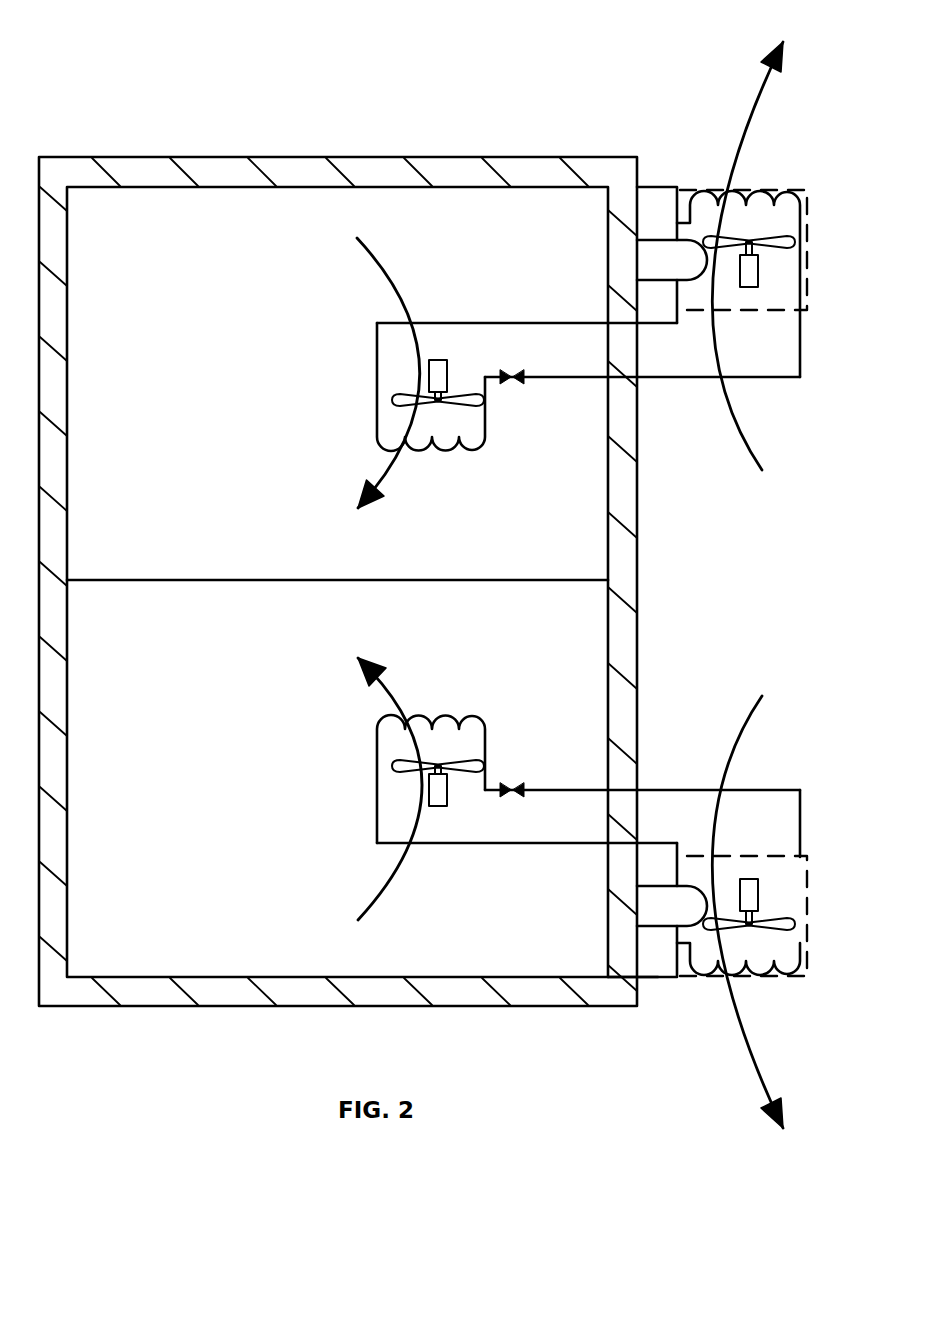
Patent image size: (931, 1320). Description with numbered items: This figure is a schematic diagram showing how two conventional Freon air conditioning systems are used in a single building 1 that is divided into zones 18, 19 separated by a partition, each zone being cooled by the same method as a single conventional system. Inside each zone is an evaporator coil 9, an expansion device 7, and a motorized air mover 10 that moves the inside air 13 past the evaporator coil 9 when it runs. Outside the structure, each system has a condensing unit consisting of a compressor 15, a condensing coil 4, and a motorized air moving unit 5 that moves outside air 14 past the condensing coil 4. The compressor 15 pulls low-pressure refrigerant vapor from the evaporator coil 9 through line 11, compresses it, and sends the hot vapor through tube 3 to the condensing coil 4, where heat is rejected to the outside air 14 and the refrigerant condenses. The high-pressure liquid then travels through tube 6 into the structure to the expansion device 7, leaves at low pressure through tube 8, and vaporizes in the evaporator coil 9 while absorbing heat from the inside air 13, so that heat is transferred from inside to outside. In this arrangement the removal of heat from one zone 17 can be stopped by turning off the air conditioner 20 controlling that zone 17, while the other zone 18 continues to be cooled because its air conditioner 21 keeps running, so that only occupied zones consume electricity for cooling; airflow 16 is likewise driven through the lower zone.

The building 1 is at (325, 168).
The tube 3 is at (726, 521).
The condensing coil 4 is at (775, 197).
The motorized air moving unit 5 is at (770, 240).
The tube 6 is at (800, 338).
The expansion device 7 is at (642, 583).
The tube 8 is at (487, 392).
The evaporator coil 9 is at (482, 453).
The motorized air mover 10 is at (440, 360).
The tube 11 is at (538, 323).
The inside air 13 is at (402, 278).
The outside air 14 is at (767, 63).
The compressor 15 is at (647, 243).
The lower compartment air flow 16 is at (400, 880).
The zone 17 is at (173, 340).
The zone 18 is at (175, 815).
The zone 19 is at (110, 578).
The air conditioner 20 is at (652, 247).
The air conditioner 21 is at (658, 977).